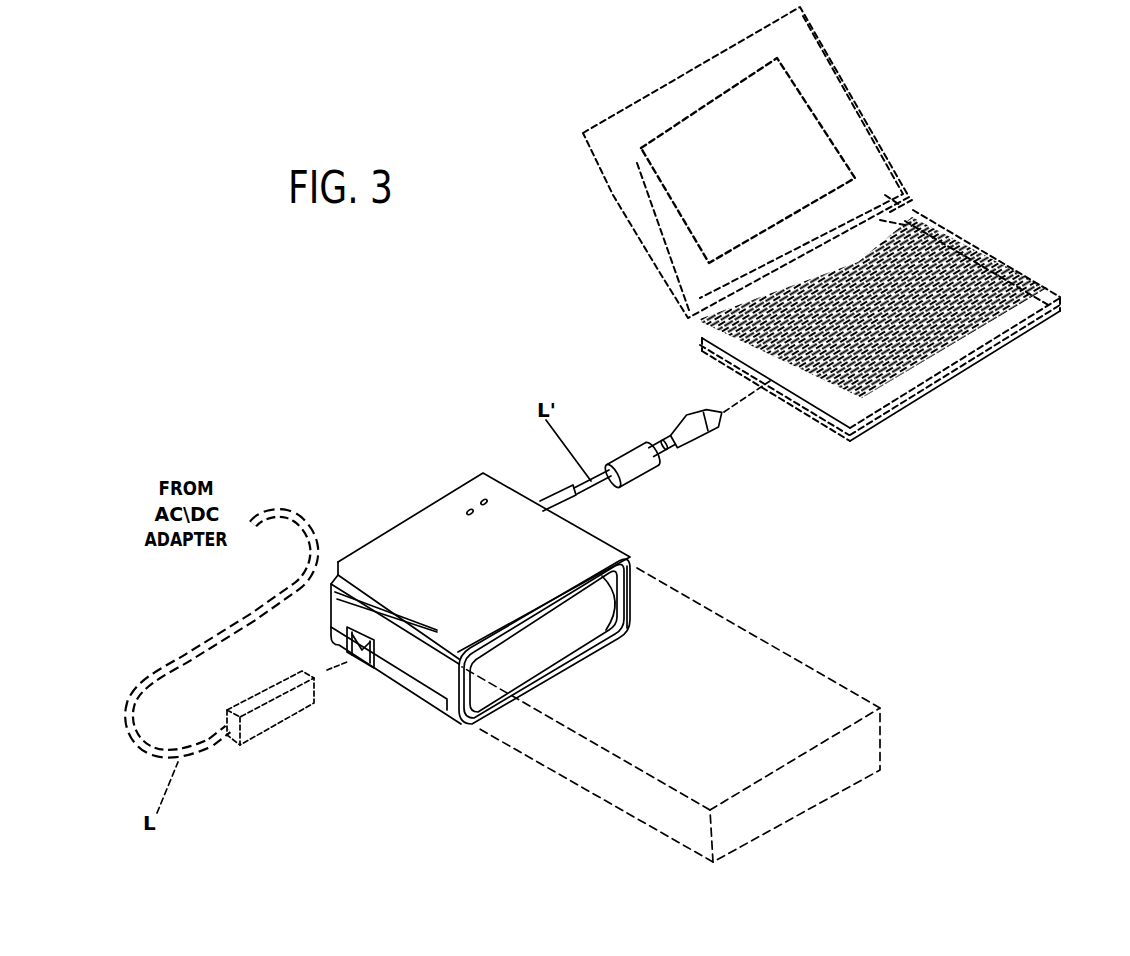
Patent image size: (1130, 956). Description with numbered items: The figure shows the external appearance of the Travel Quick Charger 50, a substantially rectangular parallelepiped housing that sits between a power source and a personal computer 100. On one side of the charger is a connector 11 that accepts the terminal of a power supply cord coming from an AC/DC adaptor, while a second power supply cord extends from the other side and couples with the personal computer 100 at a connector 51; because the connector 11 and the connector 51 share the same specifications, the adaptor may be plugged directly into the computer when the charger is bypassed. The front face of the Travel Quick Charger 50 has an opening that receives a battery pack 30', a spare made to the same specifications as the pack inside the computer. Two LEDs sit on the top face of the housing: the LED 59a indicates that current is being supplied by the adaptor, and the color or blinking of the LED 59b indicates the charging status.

The personal computer 100 is at (993, 157).
The Travel Quick Charger 50 is at (395, 703).
The connector 11 is at (347, 648).
The LED 59a is at (483, 499).
The LED 59b is at (469, 510).
The connector 51 is at (700, 440).
The battery pack 30' is at (702, 710).